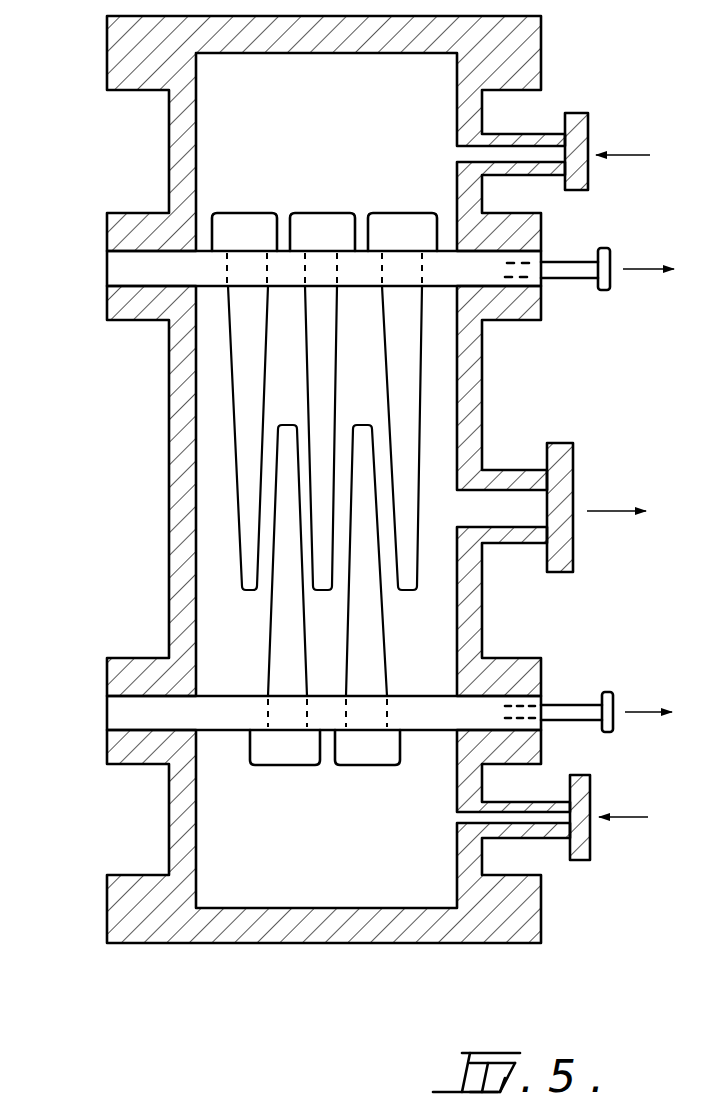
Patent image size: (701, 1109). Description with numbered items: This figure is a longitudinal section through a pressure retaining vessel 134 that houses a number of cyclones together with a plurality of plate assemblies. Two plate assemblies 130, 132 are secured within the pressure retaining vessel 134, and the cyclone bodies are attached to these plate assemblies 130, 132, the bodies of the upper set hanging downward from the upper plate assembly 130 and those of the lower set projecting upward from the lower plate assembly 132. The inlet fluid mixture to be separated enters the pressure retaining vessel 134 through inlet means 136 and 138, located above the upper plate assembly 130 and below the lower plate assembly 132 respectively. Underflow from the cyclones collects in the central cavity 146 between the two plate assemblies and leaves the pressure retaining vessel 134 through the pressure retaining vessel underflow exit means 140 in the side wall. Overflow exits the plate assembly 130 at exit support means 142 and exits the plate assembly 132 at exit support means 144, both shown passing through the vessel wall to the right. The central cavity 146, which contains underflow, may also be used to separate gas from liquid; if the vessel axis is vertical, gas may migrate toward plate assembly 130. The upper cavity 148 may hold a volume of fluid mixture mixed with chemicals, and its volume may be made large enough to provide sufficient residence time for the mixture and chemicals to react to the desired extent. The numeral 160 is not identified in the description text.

The plate assembly 130 is at (138, 266).
The plate assembly 132 is at (118, 715).
The pressure retaining vessel 134 is at (182, 545).
The inlet means 136 is at (550, 157).
The inlet means 138 is at (550, 818).
The pressure retaining vessel underflow exit means 140 is at (548, 503).
The exit support means 142 is at (605, 289).
The exit support means 144 is at (610, 692).
The central cavity 146 is at (213, 395).
The upper cavity 148 is at (326, 133).
The tapered fins 160 is at (397, 463).